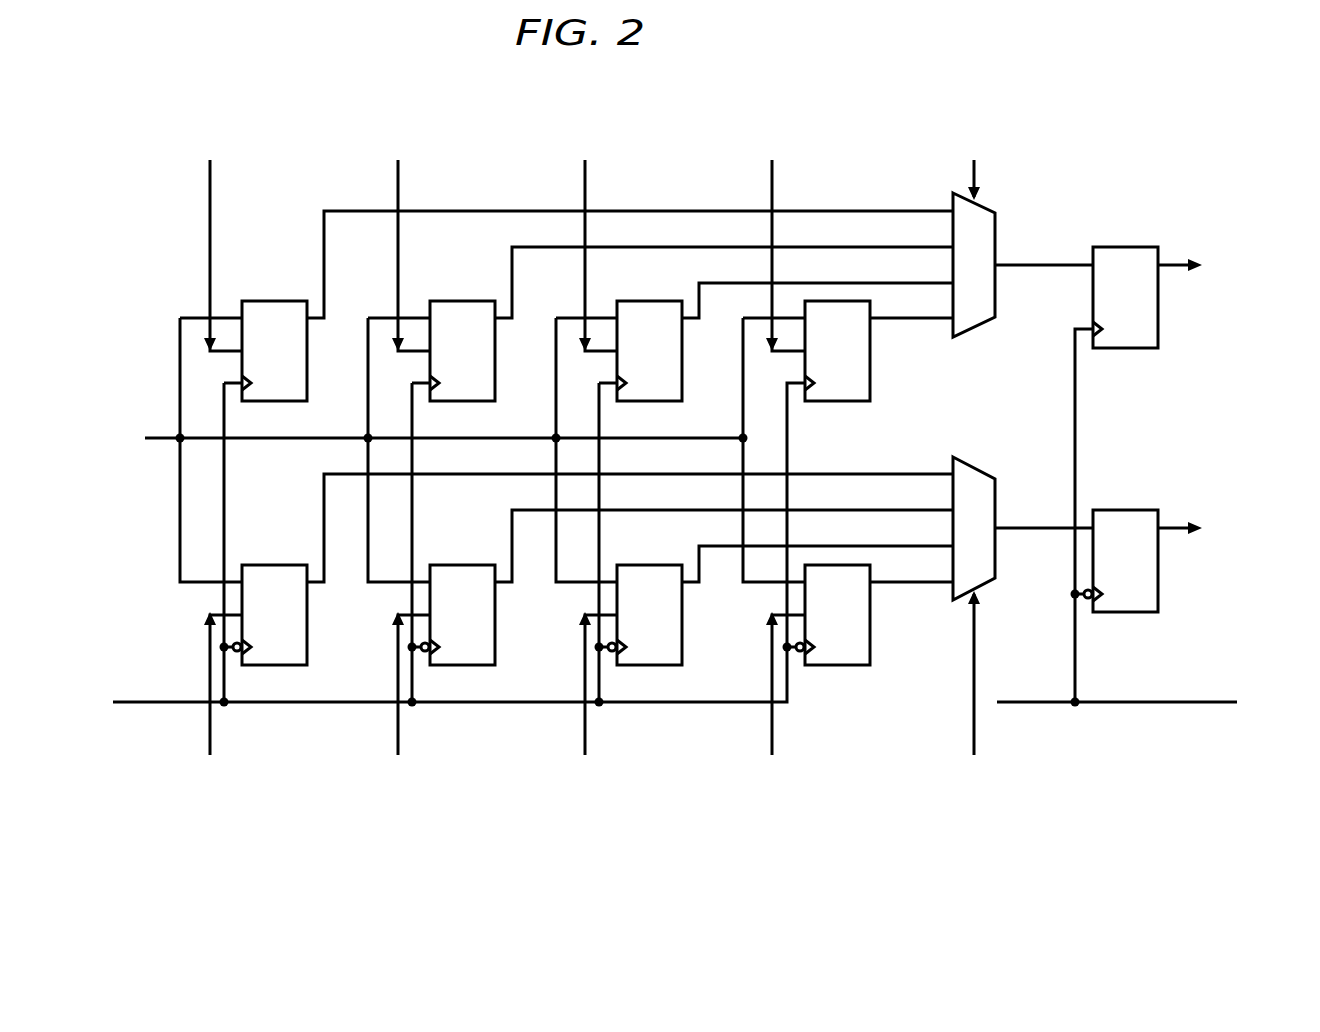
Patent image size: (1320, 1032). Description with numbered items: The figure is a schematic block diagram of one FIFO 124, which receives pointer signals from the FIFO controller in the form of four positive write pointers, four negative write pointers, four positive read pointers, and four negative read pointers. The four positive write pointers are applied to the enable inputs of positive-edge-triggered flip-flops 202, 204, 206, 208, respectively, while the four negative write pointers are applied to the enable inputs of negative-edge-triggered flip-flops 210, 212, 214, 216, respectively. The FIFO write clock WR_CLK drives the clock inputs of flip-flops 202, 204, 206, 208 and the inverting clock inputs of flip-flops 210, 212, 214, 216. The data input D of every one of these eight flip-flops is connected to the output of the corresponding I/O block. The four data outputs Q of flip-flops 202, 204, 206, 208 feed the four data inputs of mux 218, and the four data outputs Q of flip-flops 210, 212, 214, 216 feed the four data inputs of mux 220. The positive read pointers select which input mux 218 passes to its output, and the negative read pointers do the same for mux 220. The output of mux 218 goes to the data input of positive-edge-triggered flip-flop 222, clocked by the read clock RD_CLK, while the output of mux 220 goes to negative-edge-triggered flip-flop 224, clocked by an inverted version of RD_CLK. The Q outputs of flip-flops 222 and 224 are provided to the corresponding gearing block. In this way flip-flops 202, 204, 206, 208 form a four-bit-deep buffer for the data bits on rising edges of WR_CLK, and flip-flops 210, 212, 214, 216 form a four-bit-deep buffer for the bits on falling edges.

The FIFO 124 is at (593, 80).
The positive-edge-triggered flip-flop 202 is at (250, 300).
The positive-edge-triggered flip-flop 204 is at (438, 300).
The positive-edge-triggered flip-flop 206 is at (625, 300).
The positive-edge-triggered flip-flop 208 is at (870, 373).
The negative-edge-triggered flip-flop 210 is at (250, 564).
The negative-edge-triggered flip-flop 212 is at (438, 564).
The negative-edge-triggered flip-flop 214 is at (625, 564).
The negative-edge-triggered flip-flop 216 is at (870, 640).
The mux 218 is at (984, 206).
The mux 220 is at (984, 471).
The positive-edge-triggered flip-flop 222 is at (1103, 246).
The negative-edge-triggered flip-flop 224 is at (1103, 509).